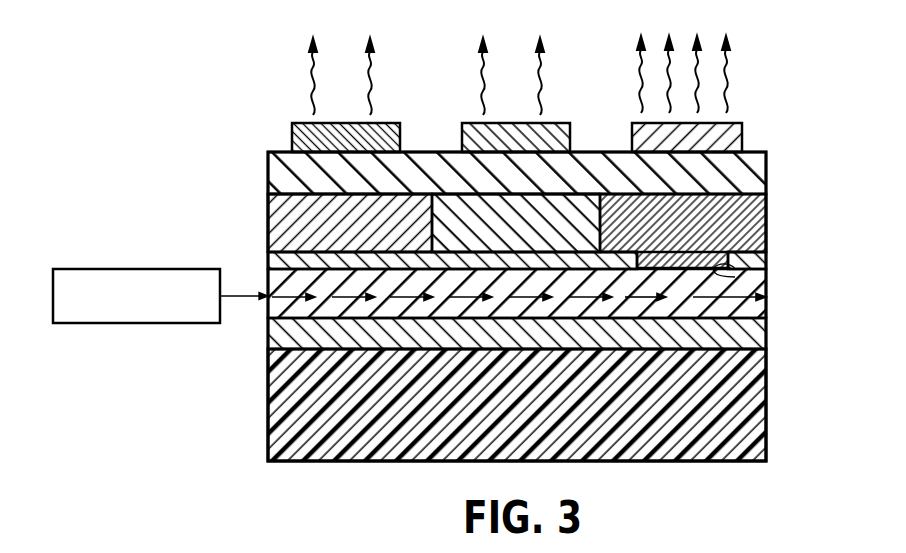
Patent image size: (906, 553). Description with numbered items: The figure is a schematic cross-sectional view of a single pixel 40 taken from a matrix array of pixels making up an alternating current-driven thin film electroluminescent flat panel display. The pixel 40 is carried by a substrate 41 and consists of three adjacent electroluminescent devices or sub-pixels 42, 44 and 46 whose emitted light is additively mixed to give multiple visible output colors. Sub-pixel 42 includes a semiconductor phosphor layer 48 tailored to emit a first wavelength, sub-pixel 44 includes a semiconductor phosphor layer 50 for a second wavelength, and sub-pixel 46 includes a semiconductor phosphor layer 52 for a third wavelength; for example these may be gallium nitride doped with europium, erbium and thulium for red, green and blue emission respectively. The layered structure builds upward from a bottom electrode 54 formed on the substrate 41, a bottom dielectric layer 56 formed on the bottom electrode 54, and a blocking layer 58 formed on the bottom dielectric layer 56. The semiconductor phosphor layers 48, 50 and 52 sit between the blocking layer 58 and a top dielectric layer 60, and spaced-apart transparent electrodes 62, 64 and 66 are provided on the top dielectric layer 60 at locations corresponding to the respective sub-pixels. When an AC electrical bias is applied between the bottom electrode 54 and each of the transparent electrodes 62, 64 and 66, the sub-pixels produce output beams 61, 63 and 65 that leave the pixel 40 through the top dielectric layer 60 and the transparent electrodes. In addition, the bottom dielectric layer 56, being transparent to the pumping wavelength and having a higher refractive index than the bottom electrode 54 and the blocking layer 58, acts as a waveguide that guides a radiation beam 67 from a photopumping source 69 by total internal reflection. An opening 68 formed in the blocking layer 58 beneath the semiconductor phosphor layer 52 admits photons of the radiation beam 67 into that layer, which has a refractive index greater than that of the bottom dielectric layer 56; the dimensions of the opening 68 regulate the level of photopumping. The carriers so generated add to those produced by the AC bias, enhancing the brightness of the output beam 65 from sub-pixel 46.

The pixel 40 is at (220, 171).
The substrate 41 is at (768, 412).
The sub-pixel 42 is at (396, 190).
The sub-pixel 44 is at (570, 190).
The sub-pixel 46 is at (770, 212).
The semiconductor phosphor layer 48 is at (366, 236).
The semiconductor phosphor layer 50 is at (526, 236).
The semiconductor phosphor layer 52 is at (699, 236).
The bottom electrode 54 is at (766, 346).
The bottom dielectric layer 56 is at (766, 309).
The blocking layer 58 is at (757, 261).
The top dielectric layer 60 is at (766, 152).
The output beam 61 is at (318, 63).
The transparent electrode 62 is at (388, 123).
The output beam 63 is at (546, 64).
The transparent electrode 64 is at (566, 123).
The output beam 65 is at (731, 63).
The transparent electrode 66 is at (742, 123).
The radiation beam 67 is at (688, 260).
The opening 68 is at (735, 277).
The photopumping source 69 is at (112, 268).